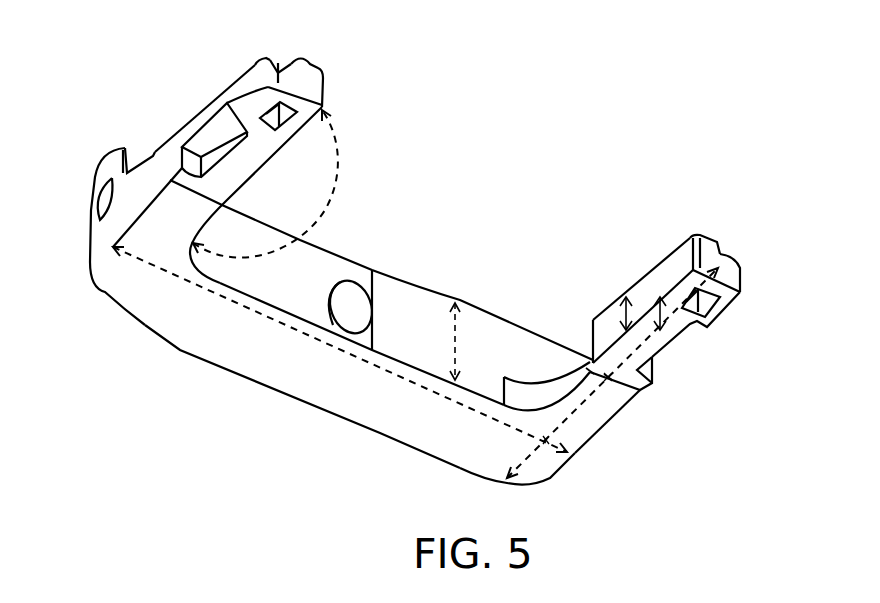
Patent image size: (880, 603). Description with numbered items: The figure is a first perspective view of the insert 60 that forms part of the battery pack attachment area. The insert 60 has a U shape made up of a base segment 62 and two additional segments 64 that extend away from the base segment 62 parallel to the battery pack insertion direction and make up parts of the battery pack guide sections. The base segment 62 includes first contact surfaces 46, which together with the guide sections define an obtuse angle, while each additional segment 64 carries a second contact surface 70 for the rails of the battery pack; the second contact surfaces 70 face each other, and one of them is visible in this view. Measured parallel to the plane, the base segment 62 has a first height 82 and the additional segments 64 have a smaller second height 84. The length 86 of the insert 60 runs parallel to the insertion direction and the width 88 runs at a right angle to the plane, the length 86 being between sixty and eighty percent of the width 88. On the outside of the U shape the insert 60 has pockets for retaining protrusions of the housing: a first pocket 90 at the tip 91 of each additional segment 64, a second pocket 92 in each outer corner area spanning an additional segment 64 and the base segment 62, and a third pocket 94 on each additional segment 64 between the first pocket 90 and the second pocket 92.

The insert 60 is at (416, 272).
The first contact surfaces 46 is at (125, 292).
The base segment 62 is at (482, 456).
The additional segments 64 is at (153, 157).
The second contact surfaces 70 is at (267, 313).
The first height 82 is at (460, 341).
The second height 84 is at (618, 312).
The length 86 is at (600, 393).
The width 88 is at (406, 382).
The first pocket 90 is at (283, 65).
The tip 91 is at (313, 82).
The second pocket 92 is at (97, 232).
The third pocket 94 is at (203, 147).